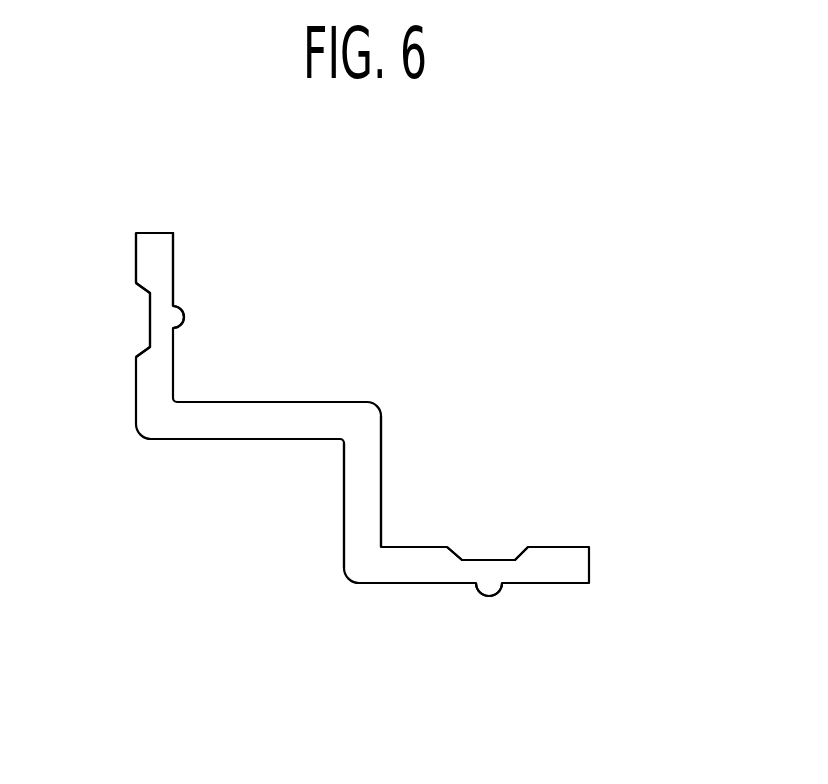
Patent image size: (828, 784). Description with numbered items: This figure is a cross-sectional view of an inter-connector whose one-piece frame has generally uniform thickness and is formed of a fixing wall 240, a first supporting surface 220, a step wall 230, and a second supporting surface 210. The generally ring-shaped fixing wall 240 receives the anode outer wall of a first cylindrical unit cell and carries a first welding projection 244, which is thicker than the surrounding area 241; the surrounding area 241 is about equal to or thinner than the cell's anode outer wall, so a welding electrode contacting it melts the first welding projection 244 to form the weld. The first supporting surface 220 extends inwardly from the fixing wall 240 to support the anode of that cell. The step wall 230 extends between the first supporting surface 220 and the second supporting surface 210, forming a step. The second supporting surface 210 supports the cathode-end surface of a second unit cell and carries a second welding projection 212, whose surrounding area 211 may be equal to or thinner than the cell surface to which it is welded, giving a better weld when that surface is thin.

The second supporting surface 210 is at (577, 565).
The area surrounding the second welding projection 211 is at (483, 570).
The second welding projection 212 is at (489, 596).
The first supporting surface 220 is at (308, 410).
The step wall 230 is at (365, 448).
The fixing wall 240 is at (162, 252).
The area surrounding the first welding projection 241 is at (150, 312).
The first welding projection 244 is at (185, 317).